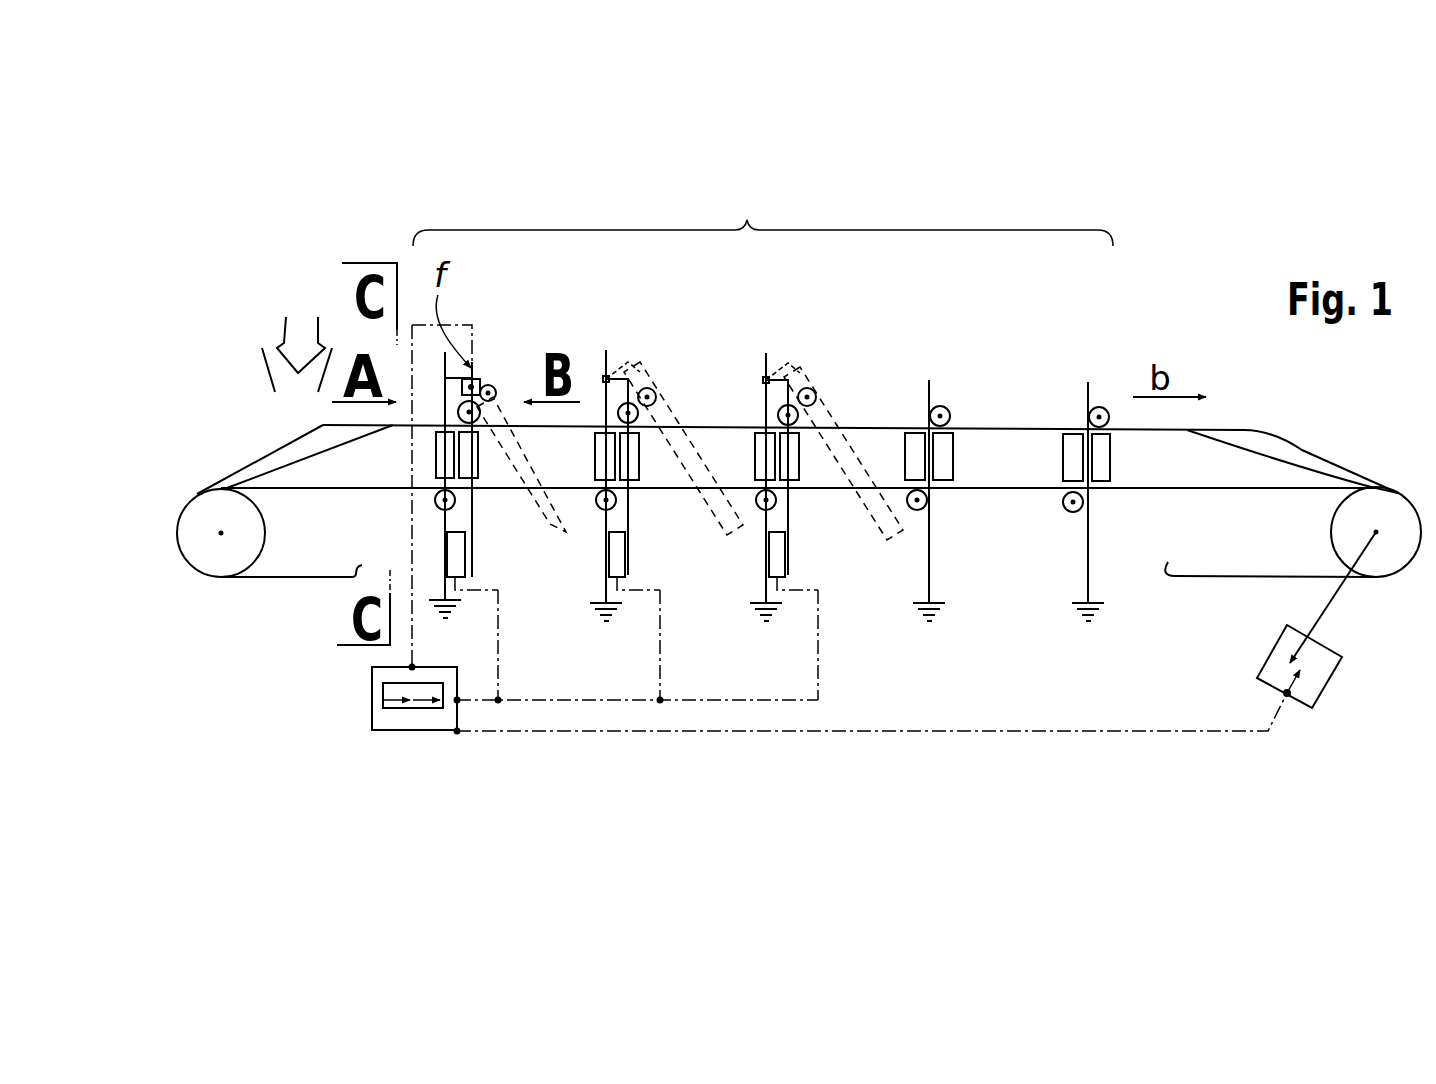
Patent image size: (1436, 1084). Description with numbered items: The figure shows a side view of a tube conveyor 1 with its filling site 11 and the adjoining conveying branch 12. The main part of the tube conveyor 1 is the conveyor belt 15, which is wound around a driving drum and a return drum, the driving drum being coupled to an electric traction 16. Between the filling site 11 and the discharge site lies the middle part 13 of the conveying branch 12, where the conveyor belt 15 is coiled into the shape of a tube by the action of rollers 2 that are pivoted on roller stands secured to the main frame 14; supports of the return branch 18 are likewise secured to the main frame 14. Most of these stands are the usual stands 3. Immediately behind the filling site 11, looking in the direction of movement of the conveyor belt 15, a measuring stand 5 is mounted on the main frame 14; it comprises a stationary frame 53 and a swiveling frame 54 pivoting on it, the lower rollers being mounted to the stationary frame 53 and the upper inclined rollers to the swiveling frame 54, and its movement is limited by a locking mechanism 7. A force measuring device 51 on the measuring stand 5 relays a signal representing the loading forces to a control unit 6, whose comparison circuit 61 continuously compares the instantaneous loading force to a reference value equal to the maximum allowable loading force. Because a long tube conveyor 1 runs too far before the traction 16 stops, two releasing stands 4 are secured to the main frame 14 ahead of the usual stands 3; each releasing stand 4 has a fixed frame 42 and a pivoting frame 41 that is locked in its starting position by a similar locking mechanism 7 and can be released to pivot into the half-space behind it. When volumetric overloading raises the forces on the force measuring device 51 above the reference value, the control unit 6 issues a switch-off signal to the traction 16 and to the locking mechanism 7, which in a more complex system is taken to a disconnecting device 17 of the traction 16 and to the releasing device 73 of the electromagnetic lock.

The tube conveyor 1 is at (1062, 403).
The rollers 2 is at (1052, 470).
The usual stands 3 is at (932, 376).
The releasing stand 4 is at (749, 369).
The measuring stand 5 is at (493, 358).
The control unit 6 is at (413, 740).
The locking mechanism 7 is at (482, 555).
The filling site 11 is at (297, 314).
The conveying branch 12 is at (263, 437).
The middle part 13 is at (763, 211).
The main frame 14 is at (915, 607).
The conveyor belt 15 is at (1020, 429).
The electric traction 16 is at (1330, 678).
The disconnecting device 17 is at (1308, 655).
The return branch 18 is at (290, 585).
The pivoting frame 41 is at (798, 374).
The fixed frame 42 is at (769, 351).
The force measuring device 51 is at (447, 384).
The stationary frame 53 is at (441, 515).
The swiveling frame 54 is at (476, 510).
The comparison circuit 61 is at (427, 710).
The releasing device 73 is at (465, 578).